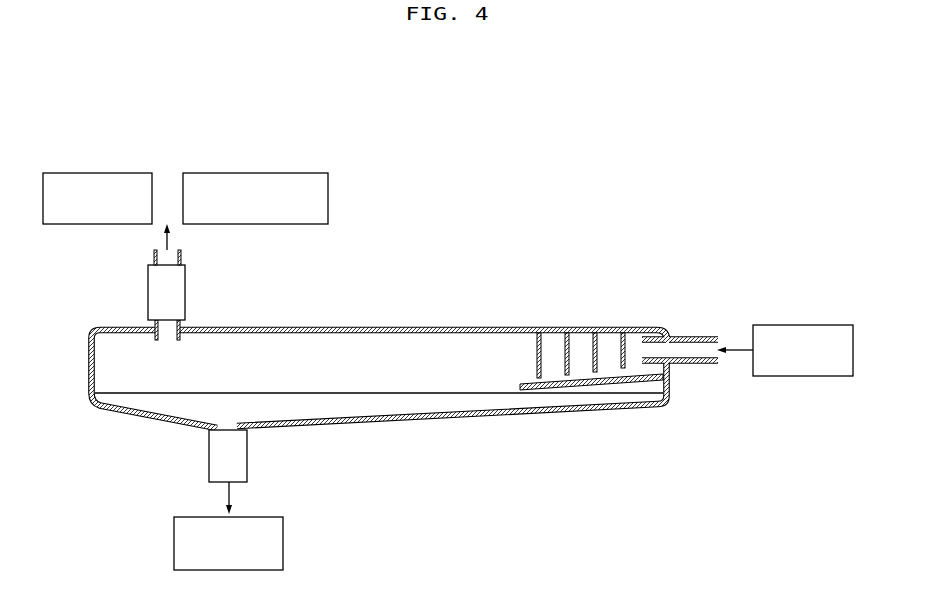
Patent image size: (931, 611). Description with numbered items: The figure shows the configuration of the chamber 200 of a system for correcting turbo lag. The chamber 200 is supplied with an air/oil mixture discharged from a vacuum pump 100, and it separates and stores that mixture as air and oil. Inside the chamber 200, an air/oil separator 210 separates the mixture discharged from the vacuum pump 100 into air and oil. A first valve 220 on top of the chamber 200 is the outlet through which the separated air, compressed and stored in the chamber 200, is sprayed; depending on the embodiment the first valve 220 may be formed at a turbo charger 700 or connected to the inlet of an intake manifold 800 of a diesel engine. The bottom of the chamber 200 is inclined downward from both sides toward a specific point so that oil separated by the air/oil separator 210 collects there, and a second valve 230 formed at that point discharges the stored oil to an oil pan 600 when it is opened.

The vacuum pump 100 is at (800, 325).
The chamber 200 is at (438, 397).
The air/oil separator 210 is at (562, 327).
The first valve 220 is at (187, 298).
The second valve 230 is at (247, 455).
The oil pan 600 is at (283, 543).
The turbo charger 700 is at (100, 173).
The intake manifold 800 is at (240, 173).